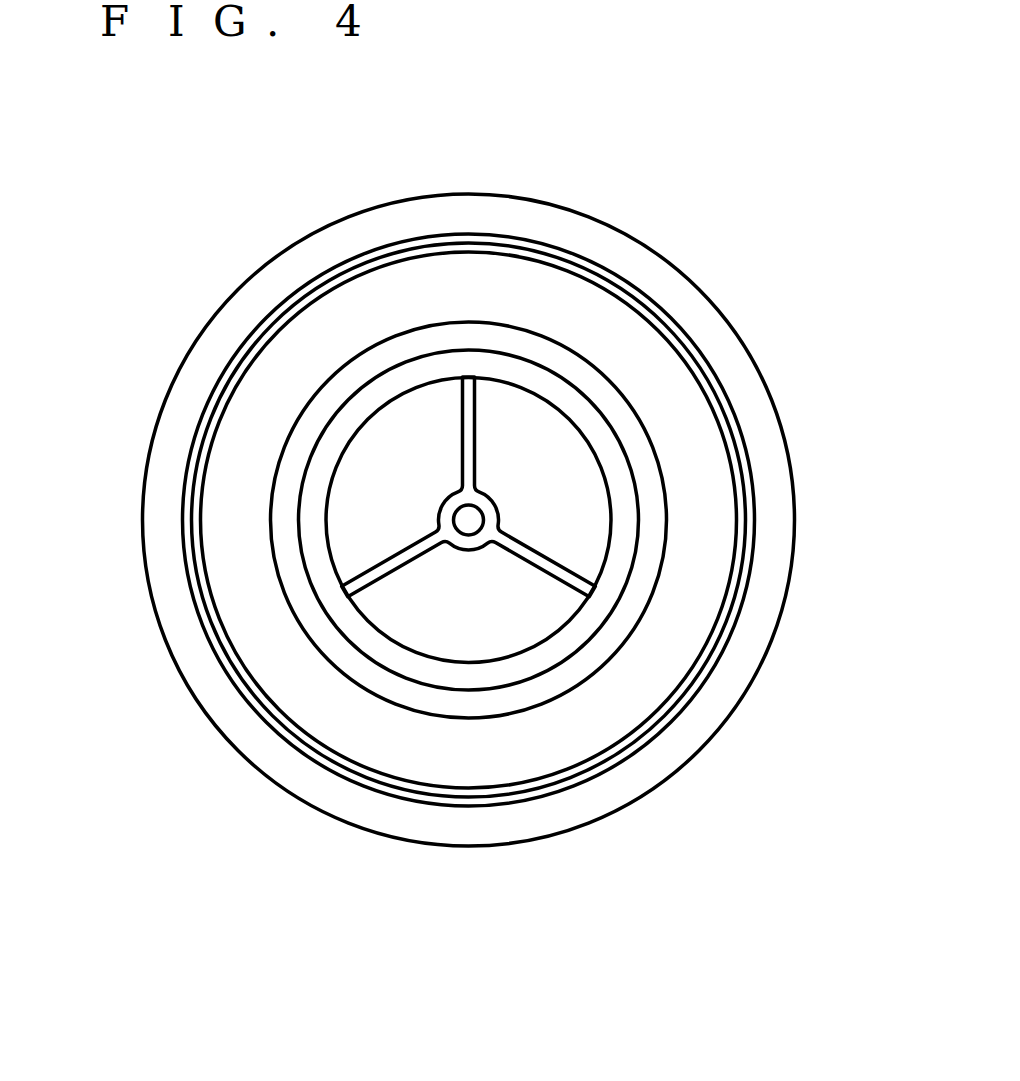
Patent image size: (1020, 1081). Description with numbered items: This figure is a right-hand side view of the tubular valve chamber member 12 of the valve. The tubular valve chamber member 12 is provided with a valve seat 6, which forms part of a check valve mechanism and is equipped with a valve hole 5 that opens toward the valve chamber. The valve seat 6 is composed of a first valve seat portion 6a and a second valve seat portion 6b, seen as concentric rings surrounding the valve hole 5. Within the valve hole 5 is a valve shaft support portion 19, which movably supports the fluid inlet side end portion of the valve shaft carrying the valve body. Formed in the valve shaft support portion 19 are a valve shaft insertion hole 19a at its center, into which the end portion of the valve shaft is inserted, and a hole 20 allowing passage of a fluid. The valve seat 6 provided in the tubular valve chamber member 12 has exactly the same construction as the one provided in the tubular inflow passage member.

The tubular valve chamber member 12 is at (604, 249).
The valve seat 6 is at (686, 415).
The first valve seat portion 6a is at (706, 478).
The second valve seat portion 6b is at (583, 628).
The valve hole 5 is at (428, 602).
The hole 20 is at (497, 610).
The valve shaft support portion 19 is at (463, 432).
The valve shaft insertion hole 19a is at (462, 513).